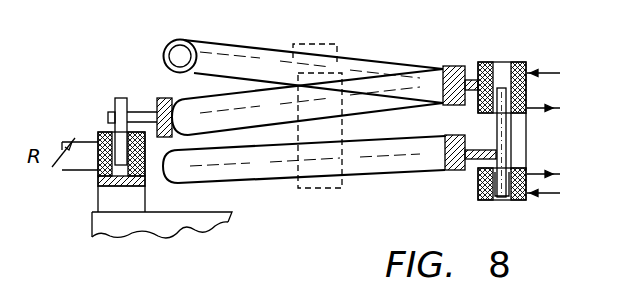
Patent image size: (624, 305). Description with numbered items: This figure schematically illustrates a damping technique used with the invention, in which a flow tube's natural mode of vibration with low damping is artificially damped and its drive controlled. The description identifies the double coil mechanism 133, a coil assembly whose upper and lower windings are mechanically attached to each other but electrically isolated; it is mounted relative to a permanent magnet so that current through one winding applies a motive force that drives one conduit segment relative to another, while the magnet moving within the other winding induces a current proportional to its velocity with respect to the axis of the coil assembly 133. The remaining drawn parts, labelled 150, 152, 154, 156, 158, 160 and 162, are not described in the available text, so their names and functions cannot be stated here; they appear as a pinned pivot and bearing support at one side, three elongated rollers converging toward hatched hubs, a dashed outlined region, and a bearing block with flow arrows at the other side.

The double coil mechanism 133 is at (494, 62).
The pivot pin 150 is at (116, 100).
The roller hub 152 is at (189, 97).
The lower bearing block 154 is at (492, 201).
The bearing 156 is at (98, 178).
The base support 158 is at (184, 230).
The contact region 160 is at (336, 42).
The rollers 162 is at (342, 72).